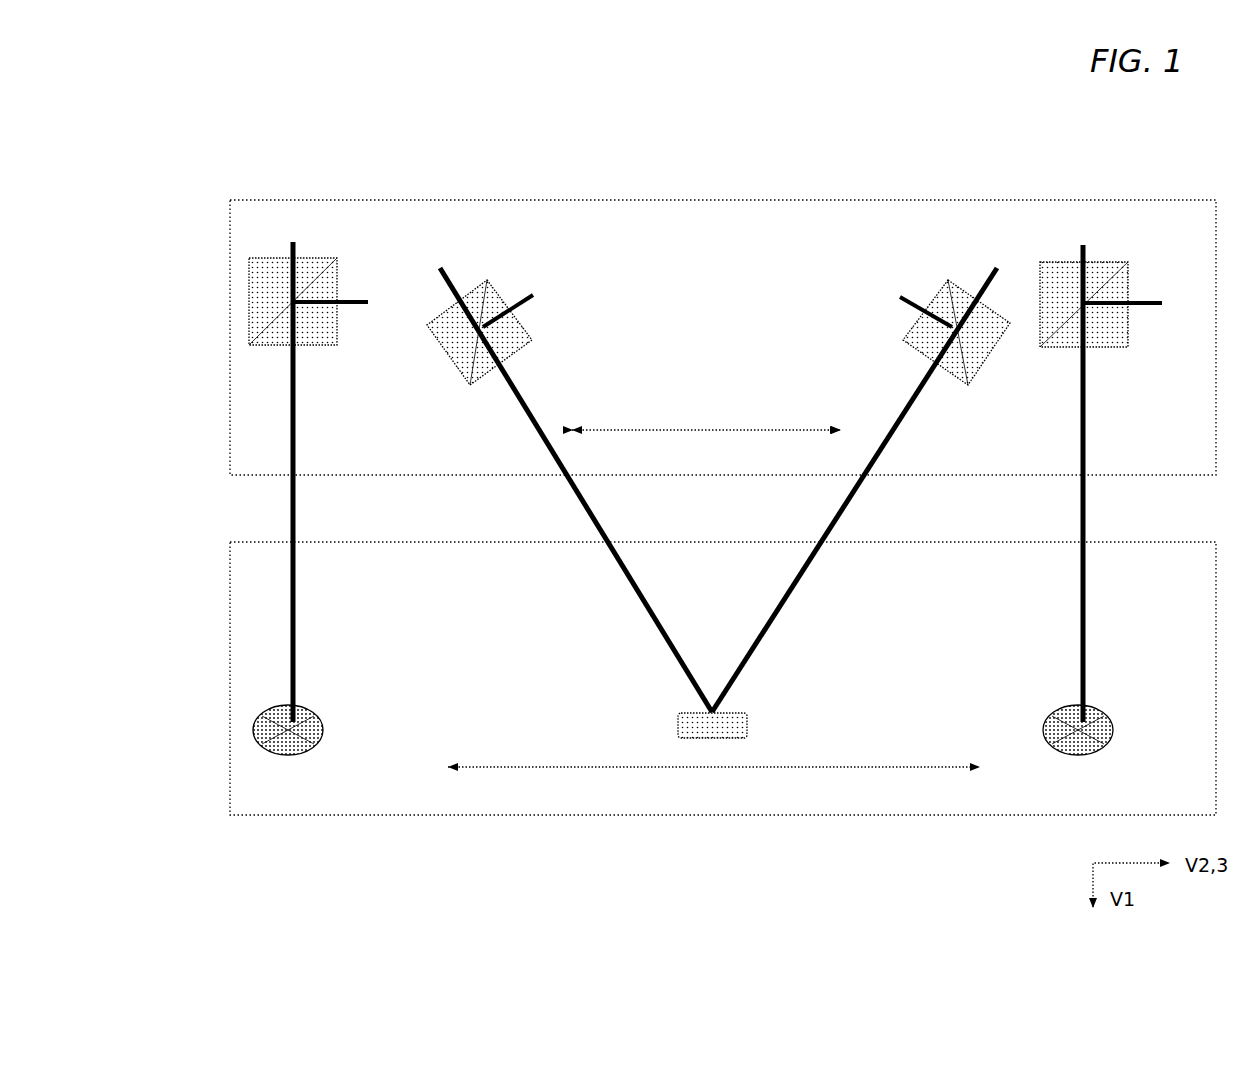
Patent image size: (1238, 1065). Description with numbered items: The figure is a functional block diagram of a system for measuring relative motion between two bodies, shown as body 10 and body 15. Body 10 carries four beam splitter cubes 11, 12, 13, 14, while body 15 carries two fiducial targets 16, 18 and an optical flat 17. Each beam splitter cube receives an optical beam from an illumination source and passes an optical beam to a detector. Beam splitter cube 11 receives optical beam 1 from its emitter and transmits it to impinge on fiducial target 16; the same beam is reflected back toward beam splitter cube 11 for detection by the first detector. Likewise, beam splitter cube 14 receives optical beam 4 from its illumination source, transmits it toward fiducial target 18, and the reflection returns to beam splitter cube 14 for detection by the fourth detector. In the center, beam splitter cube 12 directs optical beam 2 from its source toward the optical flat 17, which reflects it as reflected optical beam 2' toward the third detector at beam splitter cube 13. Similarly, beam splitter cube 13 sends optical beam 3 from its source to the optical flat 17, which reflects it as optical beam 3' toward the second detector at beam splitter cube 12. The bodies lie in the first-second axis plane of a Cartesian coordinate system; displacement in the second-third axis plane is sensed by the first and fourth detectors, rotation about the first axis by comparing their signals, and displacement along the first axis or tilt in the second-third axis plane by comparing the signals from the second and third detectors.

The body 1 10 is at (811, 198).
The beam splitter cube 11 is at (249, 262).
The beam splitter cube 12 is at (480, 281).
The beam splitter cube 13 is at (968, 385).
The beam splitter cube 14 is at (1113, 347).
The body 2 15 is at (226, 614).
The fiducial target 16 is at (256, 727).
The optical flat 17 is at (676, 723).
The fiducial target 18 is at (1102, 712).
The optical beam 1 is at (296, 503).
The optical beam 2 is at (576, 490).
The optical beam 3 is at (854, 490).
The optical beam 4 is at (1090, 502).
The reflected optical beam 2' is at (853, 585).
The reflected optical beam 3' is at (670, 584).